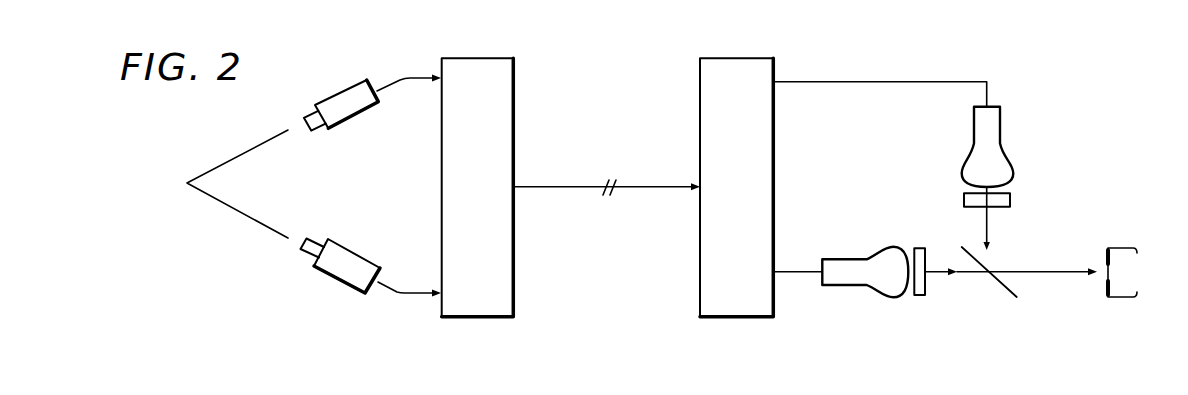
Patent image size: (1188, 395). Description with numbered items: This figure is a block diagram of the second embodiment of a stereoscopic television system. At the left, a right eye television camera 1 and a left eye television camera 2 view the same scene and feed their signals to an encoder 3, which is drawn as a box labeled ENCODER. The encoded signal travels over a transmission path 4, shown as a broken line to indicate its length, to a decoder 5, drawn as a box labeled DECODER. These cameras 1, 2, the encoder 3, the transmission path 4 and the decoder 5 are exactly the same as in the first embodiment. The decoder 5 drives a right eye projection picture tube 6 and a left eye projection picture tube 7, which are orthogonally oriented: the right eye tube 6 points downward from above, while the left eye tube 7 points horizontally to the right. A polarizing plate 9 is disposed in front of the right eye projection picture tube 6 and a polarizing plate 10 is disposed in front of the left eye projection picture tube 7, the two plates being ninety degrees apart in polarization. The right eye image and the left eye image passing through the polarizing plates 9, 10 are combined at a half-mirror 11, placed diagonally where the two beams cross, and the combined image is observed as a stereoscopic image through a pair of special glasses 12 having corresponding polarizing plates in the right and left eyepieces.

The right eye television camera 1 is at (332, 94).
The left eye television camera 2 is at (350, 250).
The encoder 3 is at (472, 58).
The transmission path 4 is at (553, 185).
The decoder 5 is at (738, 58).
The right eye projection picture tube 6 is at (1004, 152).
The left eye projection picture tube 7 is at (856, 257).
The polarizing plate 9 is at (1010, 200).
The polarizing plate 10 is at (920, 297).
The half-mirror 11 is at (1000, 284).
The pair of special glasses 12 is at (1106, 258).